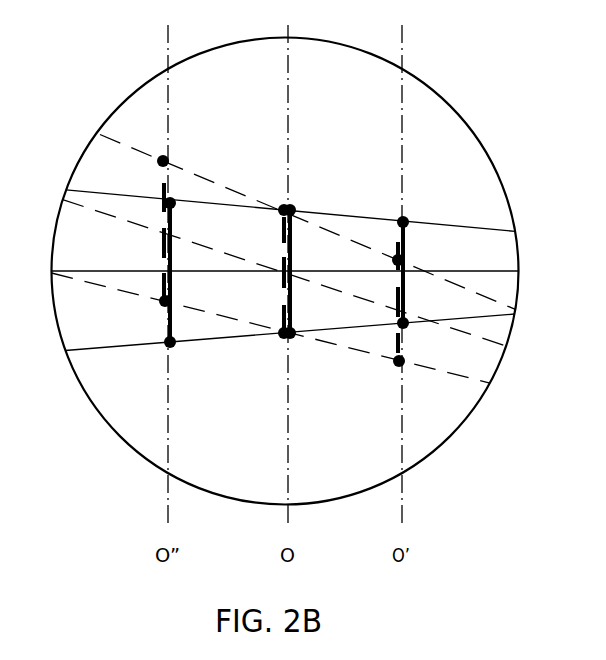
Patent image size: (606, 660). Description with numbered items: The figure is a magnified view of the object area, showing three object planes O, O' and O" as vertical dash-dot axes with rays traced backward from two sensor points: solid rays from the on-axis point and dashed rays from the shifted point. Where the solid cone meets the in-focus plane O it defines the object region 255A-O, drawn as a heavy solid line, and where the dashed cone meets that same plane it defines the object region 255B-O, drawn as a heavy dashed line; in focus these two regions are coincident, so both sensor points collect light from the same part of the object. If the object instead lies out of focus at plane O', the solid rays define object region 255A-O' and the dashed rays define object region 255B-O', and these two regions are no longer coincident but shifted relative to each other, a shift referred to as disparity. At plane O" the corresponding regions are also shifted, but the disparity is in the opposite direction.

The object region 255A-O is at (329, 226).
The object region 255B-O is at (243, 324).
The object region 255A-O' is at (446, 225).
The object region 255B-O' is at (360, 344).